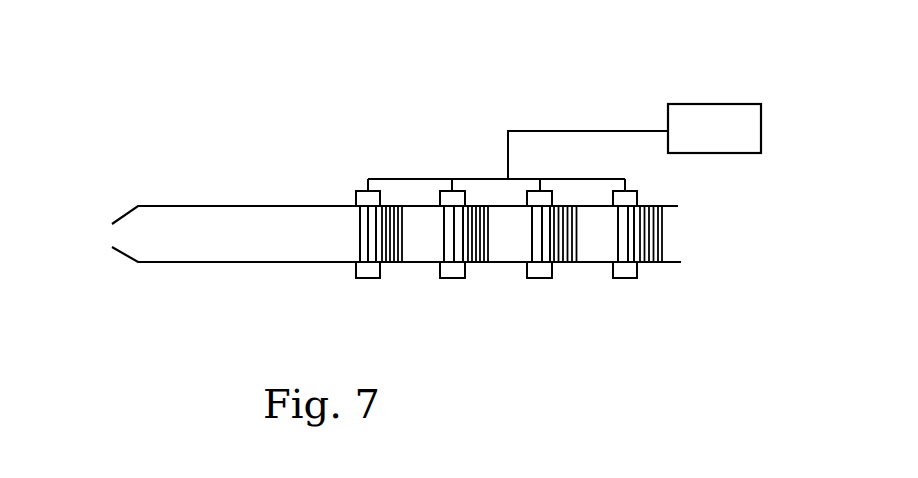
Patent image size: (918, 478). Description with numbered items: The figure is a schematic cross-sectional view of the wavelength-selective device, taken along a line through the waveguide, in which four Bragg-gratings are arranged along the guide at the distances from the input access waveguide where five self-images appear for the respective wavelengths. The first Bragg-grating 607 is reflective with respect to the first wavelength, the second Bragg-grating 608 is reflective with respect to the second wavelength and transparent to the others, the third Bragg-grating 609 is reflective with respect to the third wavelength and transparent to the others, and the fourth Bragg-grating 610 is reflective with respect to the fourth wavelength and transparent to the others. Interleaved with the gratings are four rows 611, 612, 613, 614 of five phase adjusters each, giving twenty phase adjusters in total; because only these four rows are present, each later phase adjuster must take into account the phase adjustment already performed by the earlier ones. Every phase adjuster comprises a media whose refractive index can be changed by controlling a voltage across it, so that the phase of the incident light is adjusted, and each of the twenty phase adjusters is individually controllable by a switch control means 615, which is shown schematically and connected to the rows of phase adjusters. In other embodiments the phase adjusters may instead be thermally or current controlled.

The first Bragg-grating 607 is at (662, 243).
The second Bragg-grating 608 is at (577, 211).
The third Bragg-grating 609 is at (480, 206).
The fourth Bragg-grating 610 is at (398, 265).
The row of phase adjusters 611 is at (613, 250).
The row of phase adjusters 612 is at (530, 250).
The row of phase adjusters 613 is at (445, 245).
The row of phase adjusters 614 is at (360, 252).
The switch control means 615 is at (668, 112).